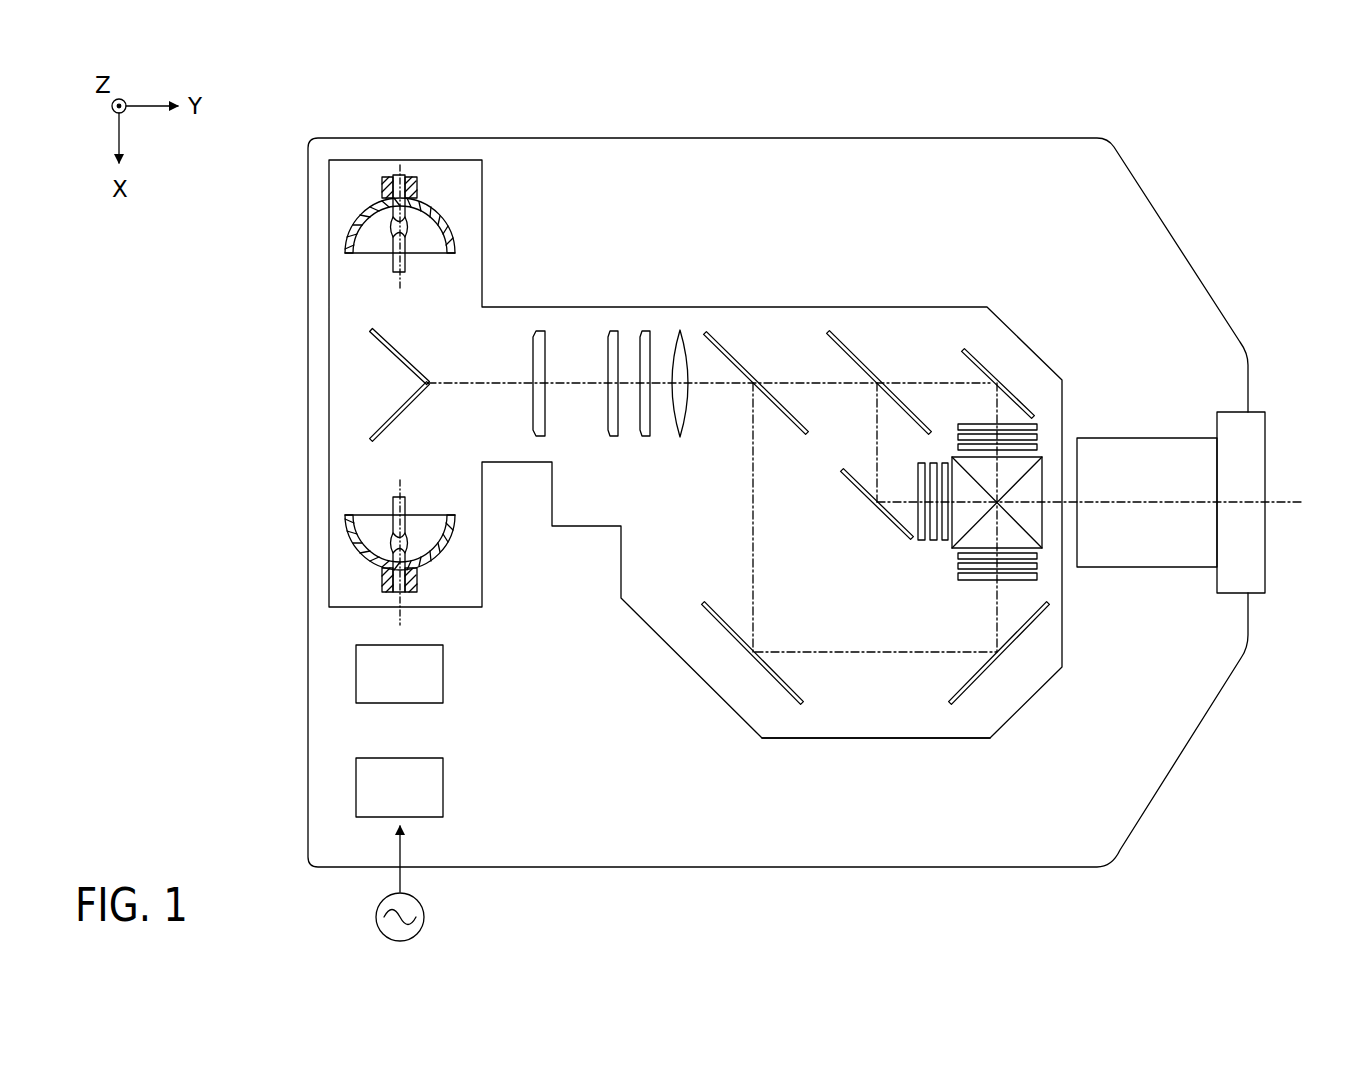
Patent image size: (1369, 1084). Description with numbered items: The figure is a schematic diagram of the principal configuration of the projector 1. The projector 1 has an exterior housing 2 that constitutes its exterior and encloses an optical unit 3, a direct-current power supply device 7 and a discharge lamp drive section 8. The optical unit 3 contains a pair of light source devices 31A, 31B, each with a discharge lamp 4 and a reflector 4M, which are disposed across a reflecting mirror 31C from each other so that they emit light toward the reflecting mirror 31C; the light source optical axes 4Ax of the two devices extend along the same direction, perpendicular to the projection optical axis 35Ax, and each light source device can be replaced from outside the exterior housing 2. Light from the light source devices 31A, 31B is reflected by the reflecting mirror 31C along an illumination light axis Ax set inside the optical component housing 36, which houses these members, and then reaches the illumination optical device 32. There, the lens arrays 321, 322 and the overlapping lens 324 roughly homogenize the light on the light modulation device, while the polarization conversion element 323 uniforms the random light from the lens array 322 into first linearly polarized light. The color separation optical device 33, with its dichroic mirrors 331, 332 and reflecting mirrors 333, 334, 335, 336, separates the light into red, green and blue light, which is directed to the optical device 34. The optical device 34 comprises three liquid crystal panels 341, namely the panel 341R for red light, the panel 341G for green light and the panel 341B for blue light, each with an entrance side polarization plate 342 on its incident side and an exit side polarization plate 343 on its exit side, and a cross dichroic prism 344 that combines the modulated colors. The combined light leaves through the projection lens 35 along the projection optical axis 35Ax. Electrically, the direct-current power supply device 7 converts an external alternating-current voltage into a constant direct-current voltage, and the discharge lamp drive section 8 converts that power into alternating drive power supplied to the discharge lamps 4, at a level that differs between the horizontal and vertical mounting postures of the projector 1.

The projector 1 is at (1219, 135).
The exterior housing 2 is at (1185, 253).
The optical unit 3 is at (860, 255).
The discharge lamp 4 is at (390, 226).
The reflector 4M is at (347, 238).
The light source optical axis 4Ax is at (398, 286).
The direct-current power supply device 7 is at (445, 786).
The discharge lamp drive section 8 is at (445, 673).
The light source device 31A is at (242, 500).
The light source device 31B is at (243, 173).
The reflecting mirror 31C is at (410, 413).
The illumination optical device 32 is at (720, 268).
The lens array 321 is at (538, 330).
The lens array 322 is at (612, 330).
The polarization conversion element 323 is at (646, 330).
The overlapping lens 324 is at (683, 331).
The color separation optical device 33 is at (936, 338).
The dichroic mirror 331 is at (748, 372).
The dichroic mirror 332 is at (870, 372).
The reflecting mirror 333 is at (795, 692).
The reflecting mirror 334 is at (955, 692).
The reflecting mirror 335 is at (856, 492).
The reflecting mirror 336 is at (990, 364).
The optical device 34 is at (1042, 405).
The liquid crystal panel 341 is at (1039, 518).
The liquid crystal panel for B light 341B is at (1040, 437).
The liquid crystal panel for G light 341G is at (933, 541).
The liquid crystal panel for R light 341R is at (1040, 566).
The entrance side polarization plate 342 is at (1040, 427).
The exit side polarization plate 343 is at (1040, 447).
The cross dichroic prism 344 is at (1033, 478).
The projection lens 35 is at (1208, 472).
The projection optical axis 35Ax is at (1225, 506).
The optical component housing 36 is at (877, 740).
The illumination light axis Ax is at (466, 382).